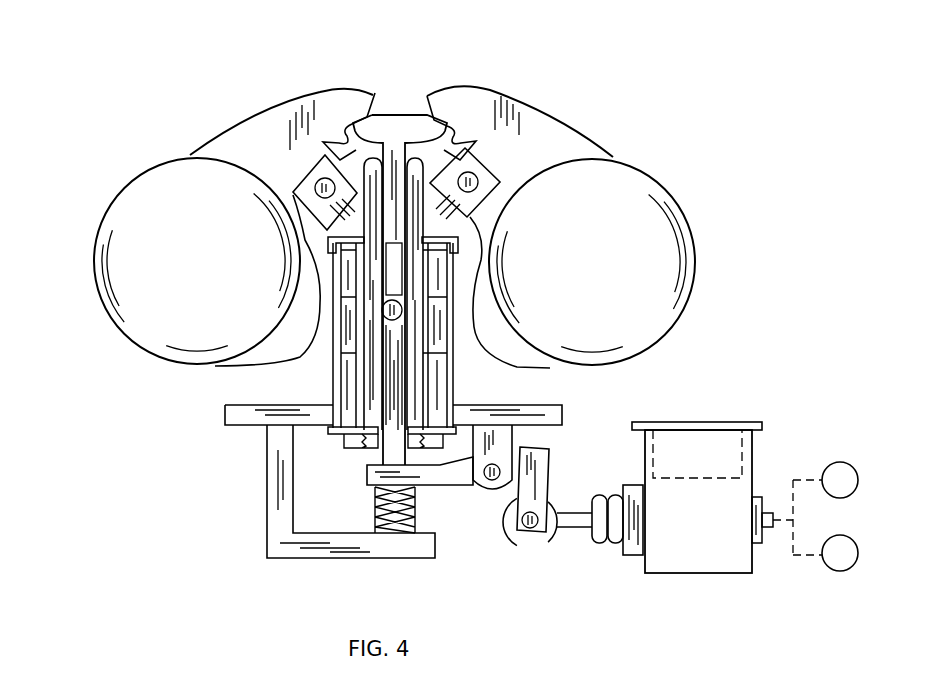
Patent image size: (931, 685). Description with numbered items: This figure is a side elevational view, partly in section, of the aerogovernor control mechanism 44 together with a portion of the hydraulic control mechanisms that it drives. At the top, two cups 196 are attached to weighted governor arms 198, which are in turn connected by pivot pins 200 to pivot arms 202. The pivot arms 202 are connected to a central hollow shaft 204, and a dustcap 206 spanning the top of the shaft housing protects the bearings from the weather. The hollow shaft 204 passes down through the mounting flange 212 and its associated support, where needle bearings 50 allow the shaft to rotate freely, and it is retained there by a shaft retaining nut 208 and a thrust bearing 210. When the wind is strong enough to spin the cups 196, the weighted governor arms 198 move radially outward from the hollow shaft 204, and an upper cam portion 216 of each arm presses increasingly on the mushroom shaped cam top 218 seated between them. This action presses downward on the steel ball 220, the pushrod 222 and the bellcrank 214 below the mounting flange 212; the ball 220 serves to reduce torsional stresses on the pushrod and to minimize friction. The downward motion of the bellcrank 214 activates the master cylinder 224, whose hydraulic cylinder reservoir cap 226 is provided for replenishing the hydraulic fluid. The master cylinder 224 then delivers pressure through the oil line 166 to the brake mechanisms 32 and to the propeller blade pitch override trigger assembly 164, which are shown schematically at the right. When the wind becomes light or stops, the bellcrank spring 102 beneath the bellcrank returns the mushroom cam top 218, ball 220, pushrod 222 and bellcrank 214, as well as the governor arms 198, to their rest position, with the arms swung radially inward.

The aerogovernor control mechanism 44 is at (165, 158).
The cups 196 is at (630, 162).
The weighted governor arms 198 is at (293, 335).
The pivot pins 200 is at (470, 182).
The pivot arms 202 is at (300, 187).
The hollow shaft 204 is at (417, 390).
The dustcap 206 is at (440, 242).
The shaft retaining nut 208 is at (357, 448).
The thrust bearing 210 is at (340, 434).
The mounting flange 212 is at (252, 427).
The bellcrank 214 is at (533, 468).
The upper cam portion 216 is at (350, 134).
The mushroom shaped cam top 218 is at (400, 112).
The steel ball 220 is at (382, 312).
The pushrod 222 is at (390, 403).
The master cylinder 224 is at (673, 574).
The hydraulic cylinder reservoir cap 226 is at (675, 422).
The needle bearings 50 is at (422, 370).
The bellcrank spring 102 is at (413, 518).
The oil line 166 is at (765, 507).
The braking mechanisms 32 is at (845, 461).
The override trigger assembly 164 is at (838, 572).